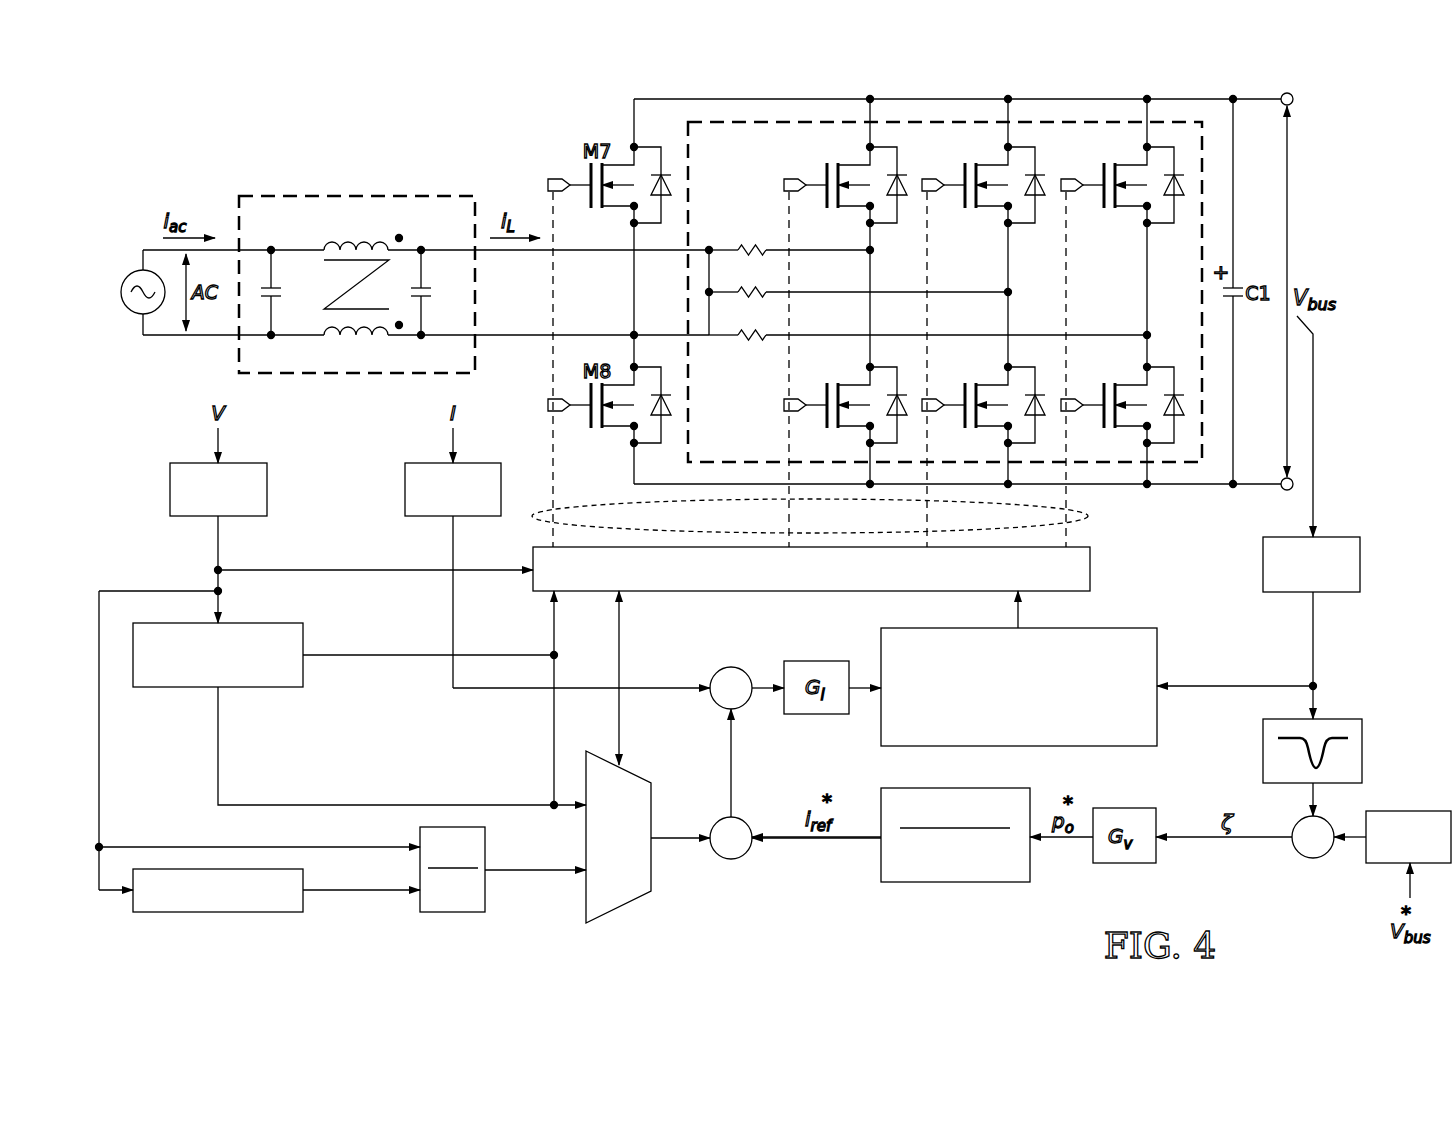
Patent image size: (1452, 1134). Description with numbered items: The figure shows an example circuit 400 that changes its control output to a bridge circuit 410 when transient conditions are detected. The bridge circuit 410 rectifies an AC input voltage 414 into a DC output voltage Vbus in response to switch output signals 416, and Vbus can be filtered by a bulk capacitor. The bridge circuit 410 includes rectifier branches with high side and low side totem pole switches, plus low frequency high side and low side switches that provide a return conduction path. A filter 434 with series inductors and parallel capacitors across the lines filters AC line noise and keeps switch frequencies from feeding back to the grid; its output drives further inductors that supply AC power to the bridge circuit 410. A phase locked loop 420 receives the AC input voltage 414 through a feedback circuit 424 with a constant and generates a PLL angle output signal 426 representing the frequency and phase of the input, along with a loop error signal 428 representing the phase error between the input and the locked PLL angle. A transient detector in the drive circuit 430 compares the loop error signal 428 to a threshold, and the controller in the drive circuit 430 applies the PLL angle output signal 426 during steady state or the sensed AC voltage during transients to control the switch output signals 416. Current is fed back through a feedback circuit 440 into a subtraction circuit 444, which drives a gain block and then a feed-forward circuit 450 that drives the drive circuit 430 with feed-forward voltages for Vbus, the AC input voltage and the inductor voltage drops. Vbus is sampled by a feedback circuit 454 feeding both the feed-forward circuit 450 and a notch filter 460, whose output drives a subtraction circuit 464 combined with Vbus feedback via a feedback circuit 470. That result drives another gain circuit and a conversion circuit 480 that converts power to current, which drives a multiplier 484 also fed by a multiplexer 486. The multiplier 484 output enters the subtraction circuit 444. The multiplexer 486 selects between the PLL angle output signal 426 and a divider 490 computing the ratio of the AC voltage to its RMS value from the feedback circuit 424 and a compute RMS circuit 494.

The circuit 400 is at (166, 148).
The bridge circuit 410 is at (945, 292).
The AC input voltage 414 is at (124, 284).
The switch output signals 416 is at (1088, 516).
The phase locked loop 420 is at (185, 690).
The feedback circuit 424 is at (170, 494).
The PLL angle output signal 426 is at (292, 804).
The loop error signal 428 is at (382, 658).
The drive circuit 430 is at (812, 592).
The filter 434 is at (343, 192).
The feedback circuit 440 is at (405, 494).
The subtraction circuit 444 is at (716, 672).
The feed-forward circuit 450 is at (1112, 628).
The feedback circuit 454 is at (1340, 594).
The notch filter 460 is at (1263, 752).
The subtraction circuit 464 is at (1325, 856).
The feedback circuit 470 is at (1414, 811).
The conversion circuit 480 is at (950, 882).
The multiplier 484 is at (745, 856).
The multiplexer 486 is at (630, 906).
The divider 490 is at (452, 912).
The compute RMS circuit 494 is at (215, 912).